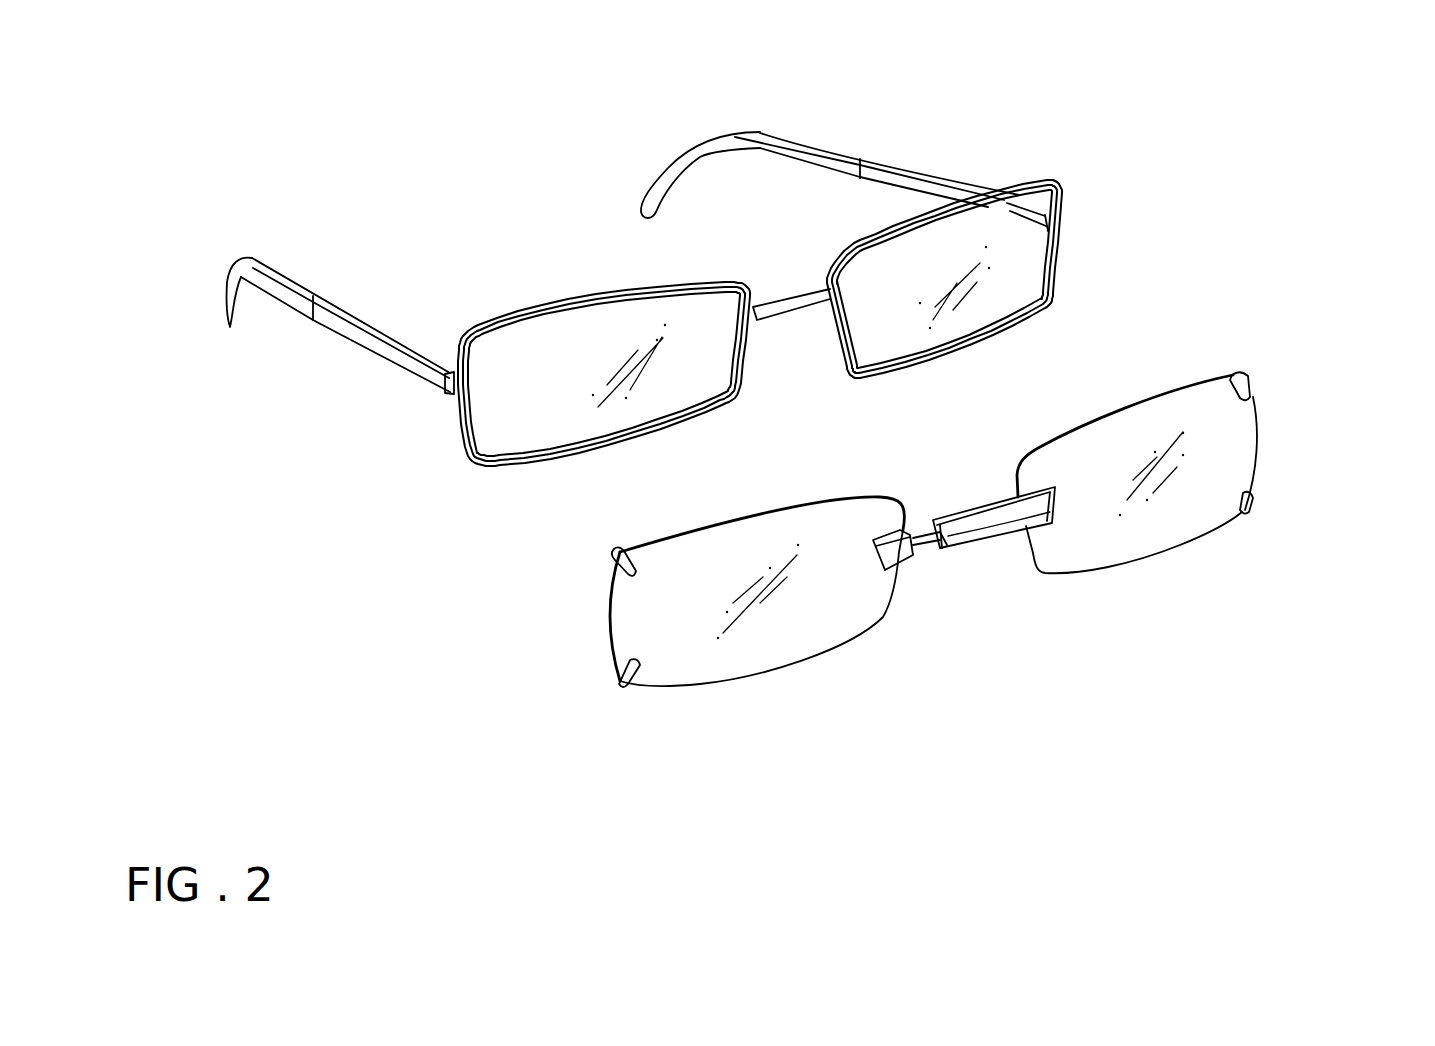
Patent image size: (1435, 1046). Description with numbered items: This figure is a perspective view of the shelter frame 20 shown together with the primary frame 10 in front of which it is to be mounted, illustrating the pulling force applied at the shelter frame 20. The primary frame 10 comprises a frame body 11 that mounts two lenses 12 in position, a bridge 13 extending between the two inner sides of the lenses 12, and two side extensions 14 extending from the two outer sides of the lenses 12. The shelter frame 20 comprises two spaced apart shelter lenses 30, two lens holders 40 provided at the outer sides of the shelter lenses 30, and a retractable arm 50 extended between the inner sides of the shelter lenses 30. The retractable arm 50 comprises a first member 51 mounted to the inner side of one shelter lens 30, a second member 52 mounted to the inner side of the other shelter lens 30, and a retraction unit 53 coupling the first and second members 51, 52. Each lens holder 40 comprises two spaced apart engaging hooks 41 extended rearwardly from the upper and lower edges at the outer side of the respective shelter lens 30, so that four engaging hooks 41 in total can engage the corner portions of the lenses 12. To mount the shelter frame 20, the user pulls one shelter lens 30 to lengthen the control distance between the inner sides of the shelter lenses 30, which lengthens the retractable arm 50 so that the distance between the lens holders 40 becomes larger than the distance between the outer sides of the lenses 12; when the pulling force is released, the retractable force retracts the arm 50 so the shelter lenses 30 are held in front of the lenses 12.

The primary frame 10 is at (1118, 214).
The frame body 11 is at (1020, 139).
The lenses 12 is at (608, 357).
The bridge 13 is at (797, 297).
The side extensions 14 is at (370, 343).
The shelter frame 20 is at (412, 594).
The shelter lenses 30 is at (766, 623).
The lens holders 40 is at (1330, 292).
The engaging hooks 41 is at (1255, 390).
The retractable arm 50 is at (973, 727).
The first member 51 is at (997, 520).
The second member 52 is at (897, 552).
The retraction unit 53 is at (930, 548).